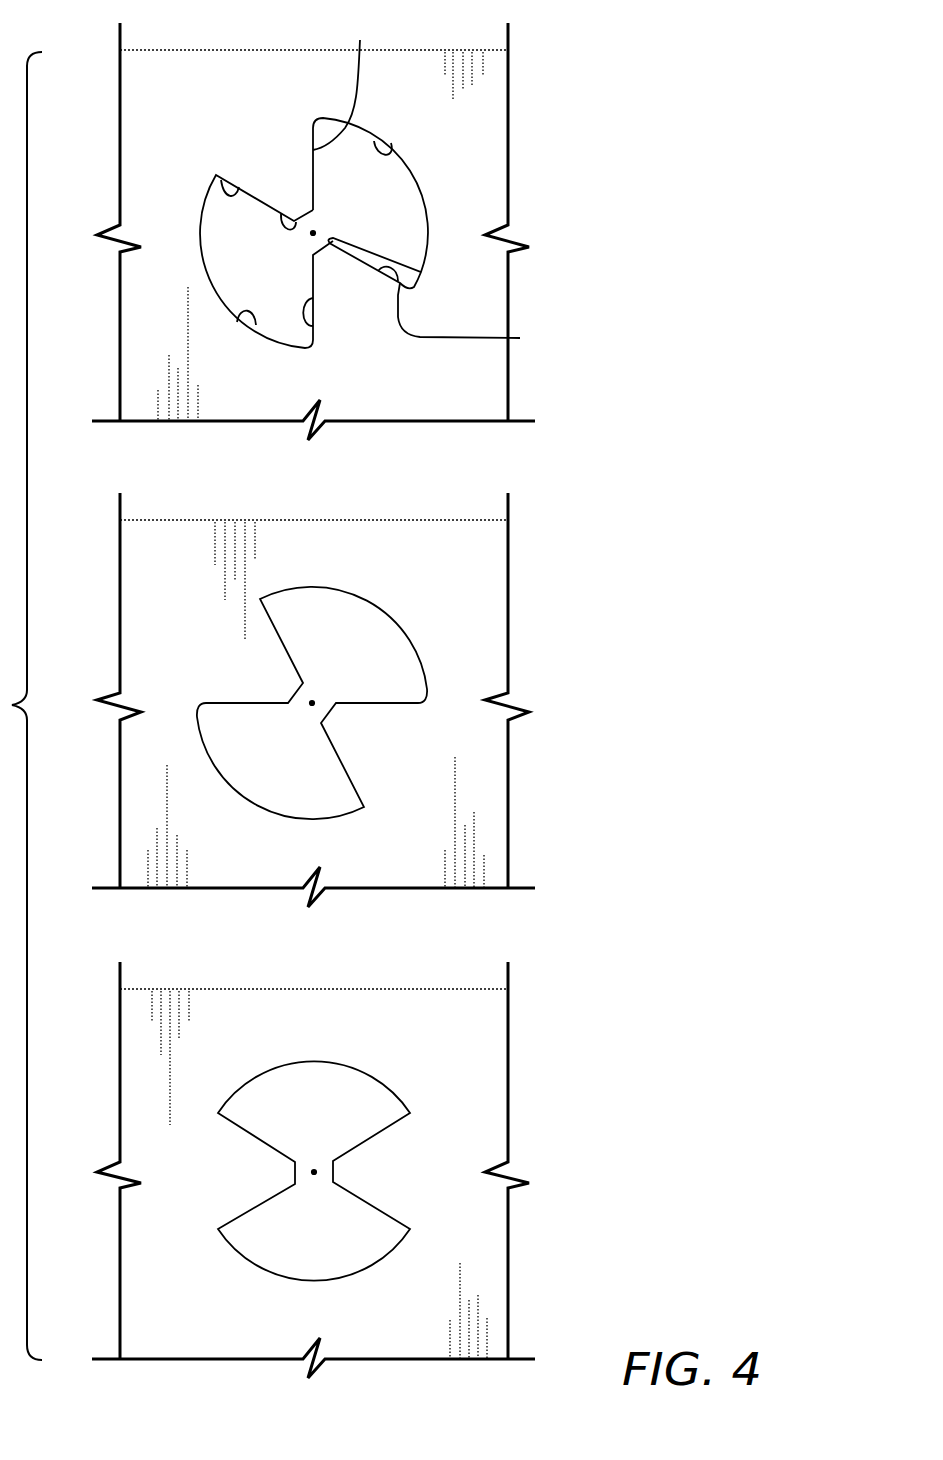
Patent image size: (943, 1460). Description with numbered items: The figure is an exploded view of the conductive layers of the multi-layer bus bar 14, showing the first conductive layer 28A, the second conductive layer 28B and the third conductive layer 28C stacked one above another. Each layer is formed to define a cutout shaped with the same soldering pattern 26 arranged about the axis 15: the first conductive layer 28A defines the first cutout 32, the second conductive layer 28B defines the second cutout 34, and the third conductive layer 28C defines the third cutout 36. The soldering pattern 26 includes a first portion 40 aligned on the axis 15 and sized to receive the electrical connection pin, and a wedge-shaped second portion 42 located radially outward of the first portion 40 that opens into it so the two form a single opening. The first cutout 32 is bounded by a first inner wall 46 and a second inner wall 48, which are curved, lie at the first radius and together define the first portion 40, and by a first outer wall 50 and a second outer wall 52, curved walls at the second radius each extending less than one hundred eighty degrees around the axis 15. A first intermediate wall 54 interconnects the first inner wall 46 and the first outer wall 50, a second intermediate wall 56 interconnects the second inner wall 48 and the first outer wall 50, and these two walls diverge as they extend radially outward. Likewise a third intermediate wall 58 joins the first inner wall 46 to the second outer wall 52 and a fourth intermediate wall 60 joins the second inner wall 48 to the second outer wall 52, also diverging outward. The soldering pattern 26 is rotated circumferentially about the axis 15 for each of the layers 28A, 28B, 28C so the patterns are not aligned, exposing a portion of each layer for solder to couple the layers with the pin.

The multi-layer bus bar 14 is at (658, 101).
The axis 15 is at (315, 228).
The soldering pattern 26 is at (198, 242).
The first conductive layer 28A is at (134, 128).
The second conductive layer 28B is at (134, 602).
The third conductive layer 28C is at (134, 1072).
The first cutout 32 is at (398, 212).
The second cutout 34 is at (385, 652).
The third cutout 36 is at (364, 1111).
The first portion 40 is at (309, 247).
The second portion 42 is at (396, 232).
The first inner wall 46 is at (283, 214).
The second inner wall 48 is at (417, 275).
The first outer wall 50 is at (380, 139).
The second outer wall 52 is at (248, 327).
The first intermediate wall 54 is at (345, 82).
The second intermediate wall 56 is at (477, 318).
The third intermediate wall 58 is at (222, 180).
The fourth intermediate wall 60 is at (316, 309).